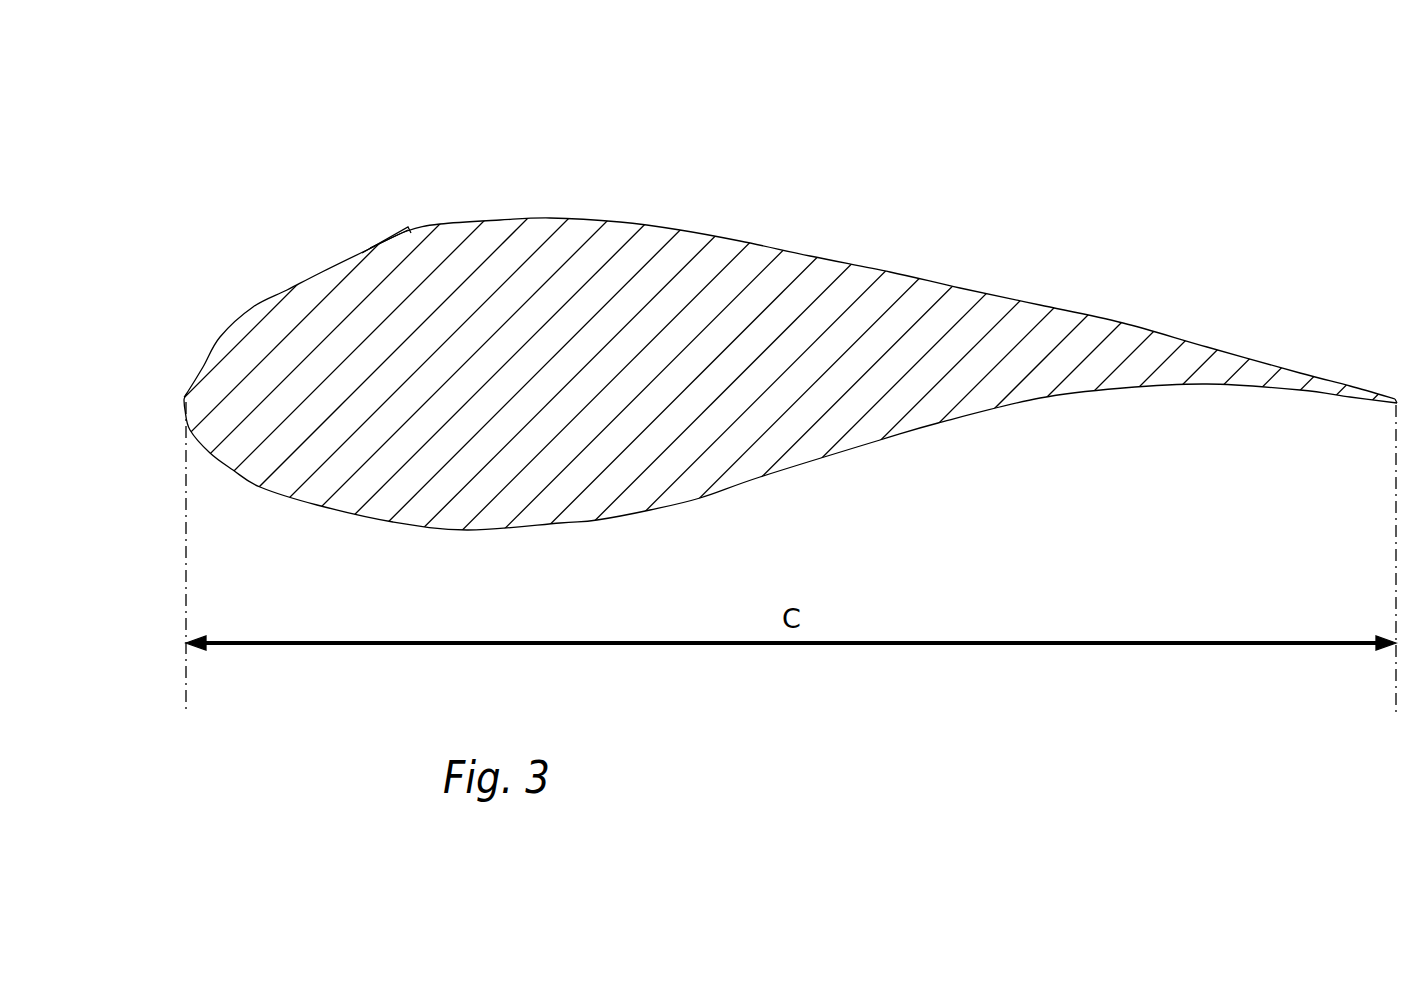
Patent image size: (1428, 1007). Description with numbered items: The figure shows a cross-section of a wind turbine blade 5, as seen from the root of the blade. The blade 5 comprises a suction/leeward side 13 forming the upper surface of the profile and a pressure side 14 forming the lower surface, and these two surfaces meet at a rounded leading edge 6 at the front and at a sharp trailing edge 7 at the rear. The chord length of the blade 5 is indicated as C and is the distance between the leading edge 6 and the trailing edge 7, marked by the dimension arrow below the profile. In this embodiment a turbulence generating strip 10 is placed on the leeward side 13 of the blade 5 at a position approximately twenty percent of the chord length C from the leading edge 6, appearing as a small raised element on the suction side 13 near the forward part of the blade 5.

The wind turbine blade 5 is at (233, 232).
The leading edge 6 is at (185, 400).
The trailing edge 7 is at (1396, 398).
The turbulence generating strip 10 is at (387, 218).
The suction/leeward side 13 is at (775, 243).
The pressure side 14 is at (938, 423).